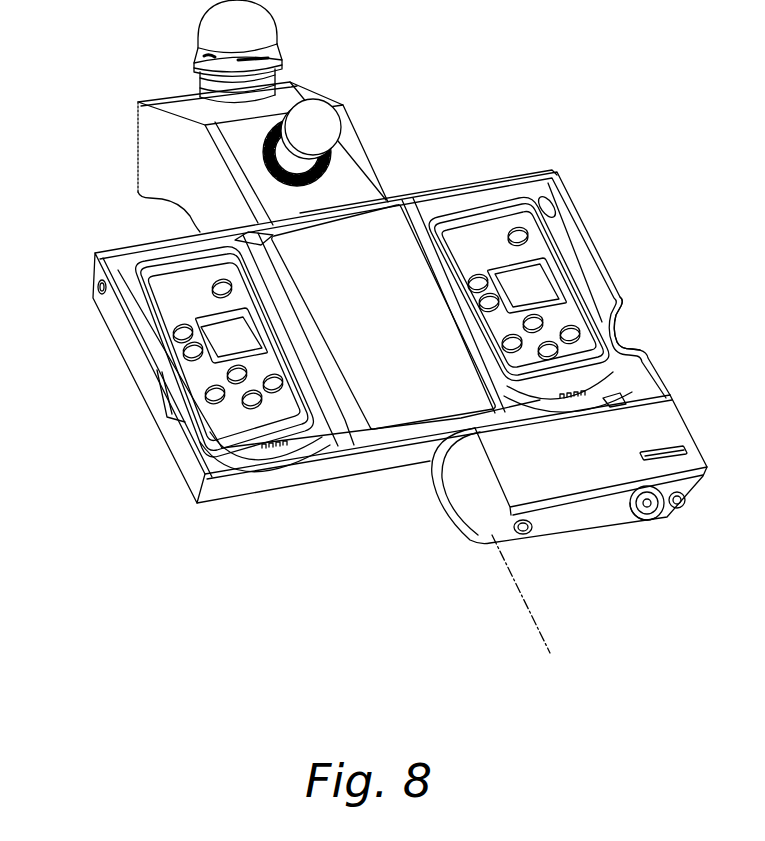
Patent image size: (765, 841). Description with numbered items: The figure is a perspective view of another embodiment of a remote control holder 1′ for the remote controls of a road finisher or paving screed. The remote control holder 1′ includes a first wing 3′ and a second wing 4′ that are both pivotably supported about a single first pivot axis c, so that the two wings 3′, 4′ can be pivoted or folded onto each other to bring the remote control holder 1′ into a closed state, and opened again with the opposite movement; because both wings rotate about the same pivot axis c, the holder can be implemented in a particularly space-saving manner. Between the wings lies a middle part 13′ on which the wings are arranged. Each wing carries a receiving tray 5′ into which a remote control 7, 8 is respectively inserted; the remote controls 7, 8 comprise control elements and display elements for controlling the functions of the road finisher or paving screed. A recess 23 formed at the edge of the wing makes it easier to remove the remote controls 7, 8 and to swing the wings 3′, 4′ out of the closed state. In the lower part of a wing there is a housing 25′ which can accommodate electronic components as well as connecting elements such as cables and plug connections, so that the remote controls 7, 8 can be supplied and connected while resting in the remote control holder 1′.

The remote control holder 1′ is at (80, 145).
The first wing 3′ is at (112, 337).
The second wing 4′ is at (490, 185).
The receiving tray 5′ is at (118, 262).
The remote control 7 is at (228, 437).
The remote control 8 is at (615, 375).
The middle part 13′ is at (394, 350).
The recess 23 is at (628, 332).
The housing 25′ is at (562, 472).
The first pivot axis c is at (518, 588).